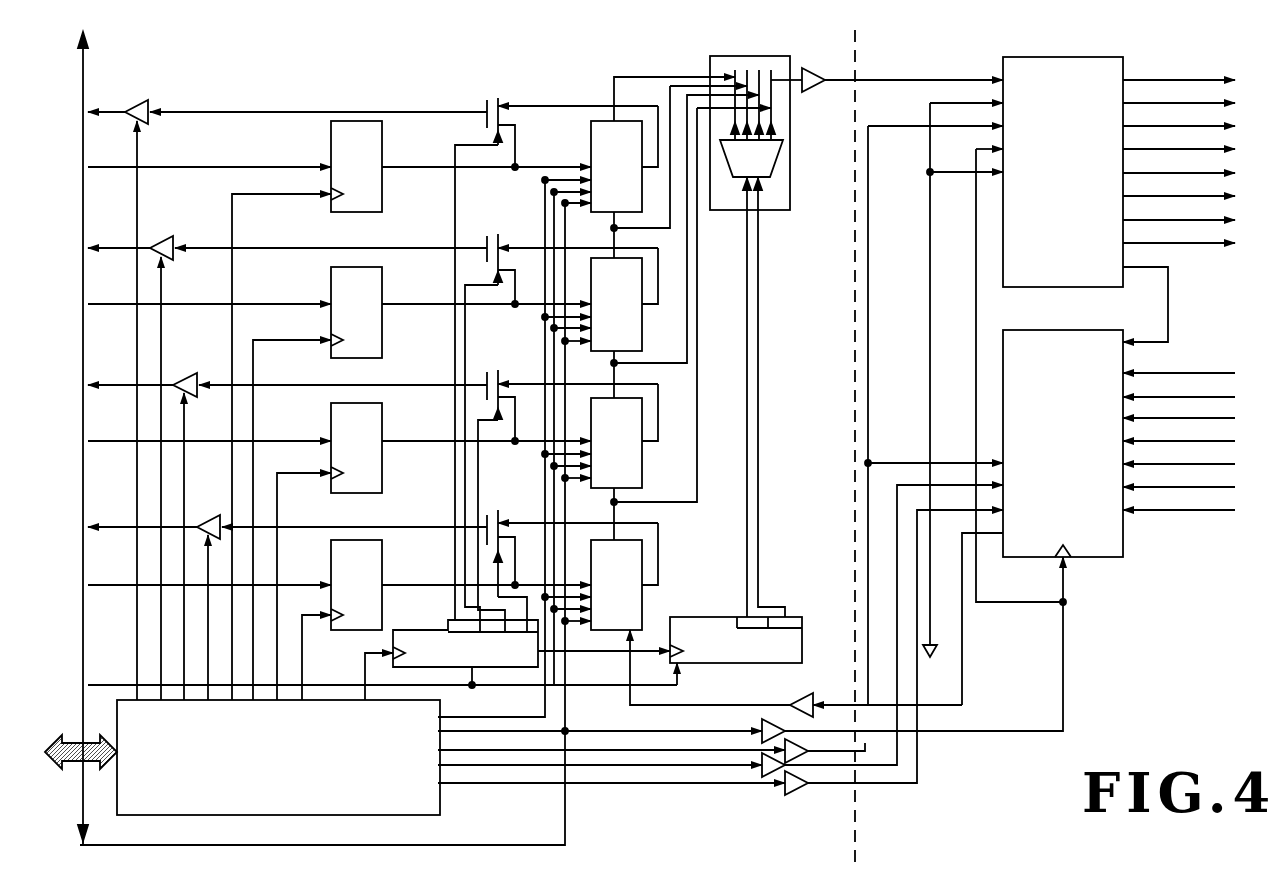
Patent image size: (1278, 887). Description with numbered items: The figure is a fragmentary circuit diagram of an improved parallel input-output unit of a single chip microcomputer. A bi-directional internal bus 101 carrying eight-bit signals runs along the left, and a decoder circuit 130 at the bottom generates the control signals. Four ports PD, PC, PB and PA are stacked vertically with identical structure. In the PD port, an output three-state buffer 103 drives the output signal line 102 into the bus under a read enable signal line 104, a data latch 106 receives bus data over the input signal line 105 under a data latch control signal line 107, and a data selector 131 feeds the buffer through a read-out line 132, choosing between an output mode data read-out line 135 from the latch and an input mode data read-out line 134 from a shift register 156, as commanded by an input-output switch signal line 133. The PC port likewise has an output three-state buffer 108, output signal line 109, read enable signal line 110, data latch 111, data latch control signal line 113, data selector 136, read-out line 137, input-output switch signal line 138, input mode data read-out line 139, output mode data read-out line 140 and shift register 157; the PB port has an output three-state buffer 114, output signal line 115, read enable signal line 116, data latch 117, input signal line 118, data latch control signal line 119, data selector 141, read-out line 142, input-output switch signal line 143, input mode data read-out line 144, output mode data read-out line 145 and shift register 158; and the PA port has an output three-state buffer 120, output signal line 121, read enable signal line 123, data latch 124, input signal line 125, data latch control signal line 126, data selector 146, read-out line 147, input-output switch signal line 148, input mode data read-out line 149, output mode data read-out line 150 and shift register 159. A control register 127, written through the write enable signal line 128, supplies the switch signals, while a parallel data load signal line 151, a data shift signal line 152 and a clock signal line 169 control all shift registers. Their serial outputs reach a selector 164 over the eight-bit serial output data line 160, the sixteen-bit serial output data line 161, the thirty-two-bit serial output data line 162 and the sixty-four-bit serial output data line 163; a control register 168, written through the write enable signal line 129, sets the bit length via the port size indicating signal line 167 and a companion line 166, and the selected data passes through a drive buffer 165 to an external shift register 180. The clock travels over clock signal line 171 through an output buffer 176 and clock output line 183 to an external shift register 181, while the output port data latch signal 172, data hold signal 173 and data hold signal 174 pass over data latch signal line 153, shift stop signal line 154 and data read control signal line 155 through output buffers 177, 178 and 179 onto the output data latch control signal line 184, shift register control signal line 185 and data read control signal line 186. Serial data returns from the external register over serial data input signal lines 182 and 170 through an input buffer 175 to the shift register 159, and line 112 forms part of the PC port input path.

The bi-directional internal bus 101 is at (82, 82).
The output signal line 102 is at (110, 110).
The output 3-state buffer 103 is at (148, 98).
The read enable signal line 104 is at (137, 147).
The input signal line 105 is at (207, 167).
The data latch 106 is at (331, 147).
The data latch control signal line 107 is at (232, 216).
The output 3-state buffer 108 is at (158, 232).
The output signal line 109 is at (111, 246).
The read enable signal line 110 is at (161, 272).
The data latch 111 is at (331, 281).
The data line 112 is at (112, 304).
The data latch control signal line 113 is at (255, 360).
The output 3-state buffer 114 is at (184, 372).
The output signal line 115 is at (123, 385).
The read enable signal line 116 is at (182, 408).
The data latch 117 is at (331, 418).
The input signal line 118 is at (120, 441).
The data latch control signal line 119 is at (295, 478).
The output 3-state buffer 120 is at (208, 515).
The output signal line 121 is at (130, 527).
The read enable signal line 123 is at (208, 556).
The data latch 124 is at (330, 570).
The input signal line 125 is at (128, 583).
The data latch control signal line 126 is at (300, 632).
The control register 127 is at (365, 662).
The write enable signal line 128 is at (392, 640).
The write enable signal line 129 is at (120, 685).
The decoder circuit 130 is at (117, 718).
The data selector 131 is at (483, 103).
The read-out line 132 is at (427, 112).
The input-output switch signal line 133 is at (455, 157).
The input mode data read-out line 134 is at (550, 100).
The output mode data read-out line 135 is at (519, 132).
The data selector 136 is at (485, 262).
The read-out line 137 is at (470, 247).
The input-output switch signal line 138 is at (470, 290).
The input mode data read-out line 139 is at (612, 228).
The output mode data read-out line 140 is at (522, 275).
The data selector 141 is at (485, 380).
The read-out line 142 is at (470, 383).
The input-output switch signal line 143 is at (478, 428).
The input mode data read-out line 144 is at (587, 382).
The output mode data read-out line 145 is at (517, 410).
The data selector 146 is at (486, 522).
The read-out line 147 is at (470, 523).
The input-output switch signal line 148 is at (478, 570).
The input mode data read-out line 149 is at (608, 502).
The output mode data read-out line 150 is at (517, 555).
The parallel data load signal line 151 is at (520, 717).
The data shift signal line 152 is at (472, 730).
The data latch signal line 153 is at (530, 752).
The shift stop signal line 154 is at (463, 767).
The data read control signal line 155 is at (505, 785).
The shift register 156 is at (643, 192).
The shift register 157 is at (630, 360).
The shift register 158 is at (643, 472).
The shift register 159 is at (643, 598).
The 8 bit serial output data line 160 is at (705, 110).
The 16 bit serial output data line 161 is at (705, 93).
The 32 bit serial output data line 162 is at (669, 100).
The 64 bit serial output data line 163 is at (612, 88).
The selector 164 is at (765, 56).
The drive buffer 165 is at (812, 67).
The select line 166 is at (760, 335).
The port size indicating signal line 167 is at (745, 320).
The control register 168 is at (803, 638).
The clock signal line 169 is at (340, 848).
The serial data input signal line 170 is at (762, 705).
The clock signal line 171 is at (592, 731).
The output port data latch signal 172 is at (707, 752).
The data hold signal 173 is at (650, 768).
The data hold signal 174 is at (592, 785).
The input buffer 175 is at (805, 702).
The output buffer 176 is at (762, 717).
The output buffer 177 is at (862, 790).
The output buffer 178 is at (778, 780).
The output buffer 179 is at (802, 790).
The external shift register 180 is at (1000, 68).
The external shift register 181 is at (1003, 387).
The serial data input signal line 182 is at (963, 631).
The clock output line 183 is at (1063, 668).
The output data latch control signal line 184 is at (865, 745).
The shift register control signal line 185 is at (897, 760).
The data read control signal line 186 is at (788, 735).